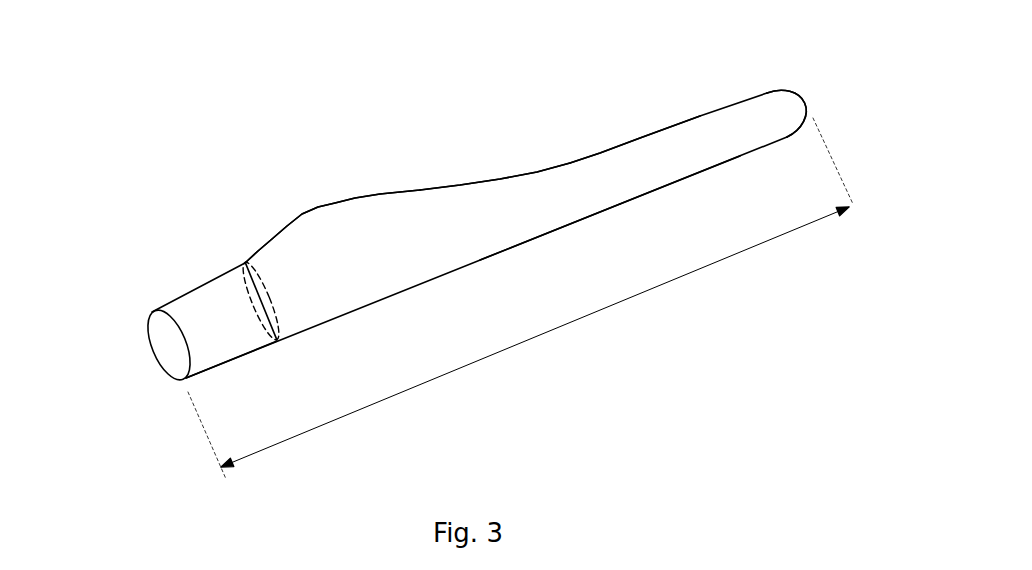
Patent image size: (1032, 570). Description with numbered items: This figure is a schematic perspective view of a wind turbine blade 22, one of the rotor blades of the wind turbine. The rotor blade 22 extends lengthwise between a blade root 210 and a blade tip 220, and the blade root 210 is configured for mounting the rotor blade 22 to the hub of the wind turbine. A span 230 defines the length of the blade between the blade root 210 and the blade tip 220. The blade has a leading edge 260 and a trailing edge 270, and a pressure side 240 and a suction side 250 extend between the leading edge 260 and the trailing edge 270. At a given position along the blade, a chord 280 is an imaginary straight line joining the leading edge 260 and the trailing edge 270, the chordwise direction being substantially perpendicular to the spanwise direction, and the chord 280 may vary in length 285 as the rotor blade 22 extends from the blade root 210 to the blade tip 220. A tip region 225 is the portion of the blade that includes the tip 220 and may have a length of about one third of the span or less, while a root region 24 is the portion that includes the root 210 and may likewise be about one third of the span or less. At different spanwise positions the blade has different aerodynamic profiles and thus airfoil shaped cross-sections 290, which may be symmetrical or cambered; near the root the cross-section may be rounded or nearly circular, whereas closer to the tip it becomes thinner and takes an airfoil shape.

The wind turbine blade 22 is at (242, 125).
The root region 24 is at (258, 371).
The blade root 210 is at (123, 358).
The blade tip 220 is at (828, 92).
The tip region 225 is at (643, 148).
The span 230 is at (538, 337).
The pressure side 240 is at (335, 237).
The suction side 250 is at (546, 218).
The leading edge 260 is at (620, 205).
The trailing edge 270 is at (535, 172).
The chord 280 is at (257, 302).
The length 285 is at (613, 258).
The airfoil shaped cross-section 290 is at (270, 283).